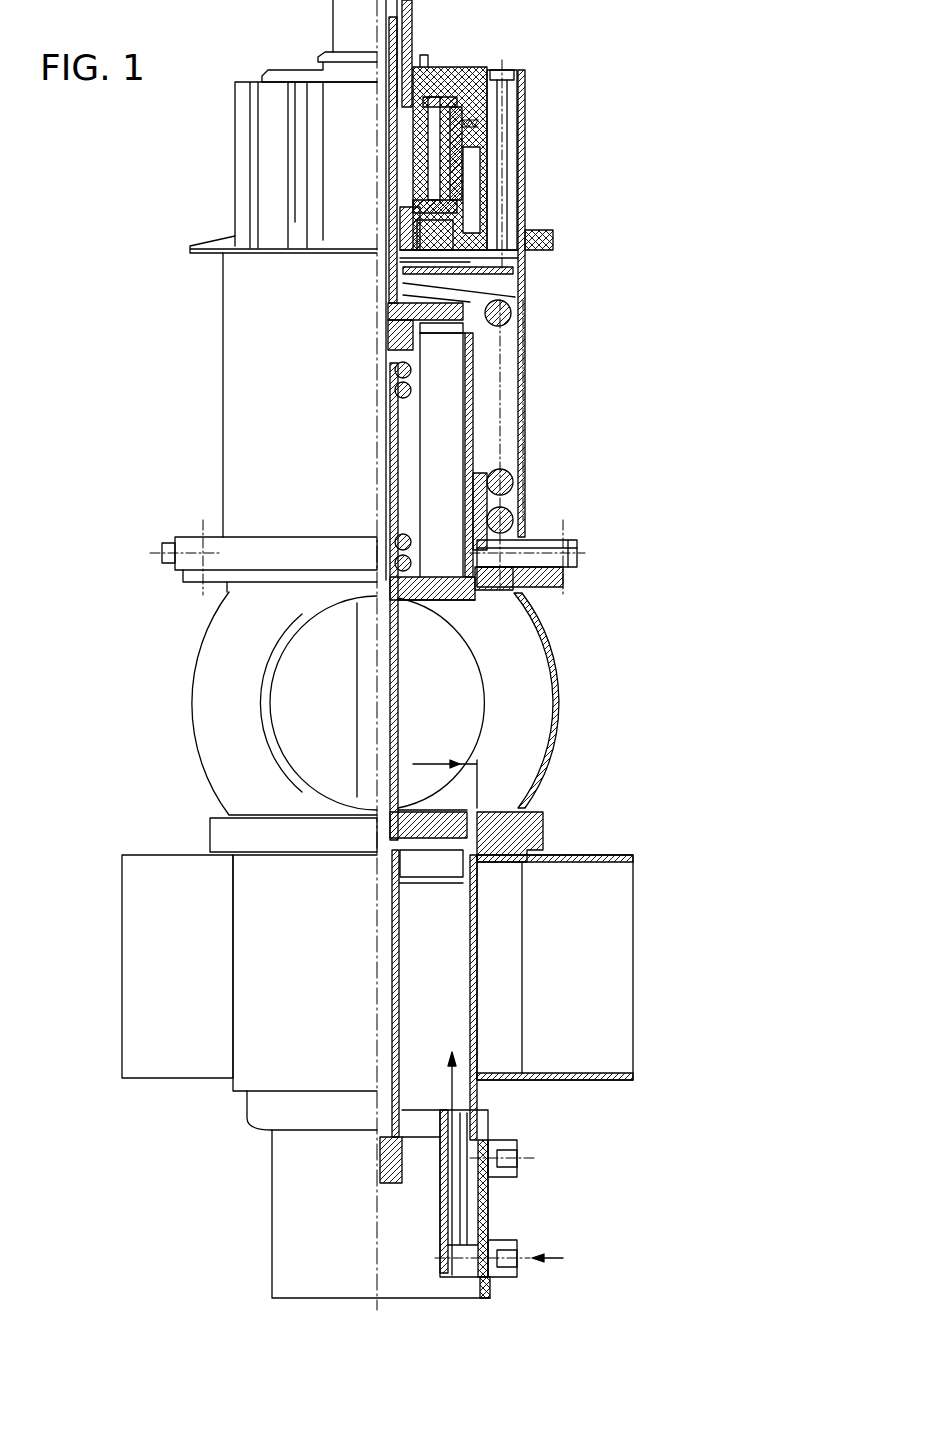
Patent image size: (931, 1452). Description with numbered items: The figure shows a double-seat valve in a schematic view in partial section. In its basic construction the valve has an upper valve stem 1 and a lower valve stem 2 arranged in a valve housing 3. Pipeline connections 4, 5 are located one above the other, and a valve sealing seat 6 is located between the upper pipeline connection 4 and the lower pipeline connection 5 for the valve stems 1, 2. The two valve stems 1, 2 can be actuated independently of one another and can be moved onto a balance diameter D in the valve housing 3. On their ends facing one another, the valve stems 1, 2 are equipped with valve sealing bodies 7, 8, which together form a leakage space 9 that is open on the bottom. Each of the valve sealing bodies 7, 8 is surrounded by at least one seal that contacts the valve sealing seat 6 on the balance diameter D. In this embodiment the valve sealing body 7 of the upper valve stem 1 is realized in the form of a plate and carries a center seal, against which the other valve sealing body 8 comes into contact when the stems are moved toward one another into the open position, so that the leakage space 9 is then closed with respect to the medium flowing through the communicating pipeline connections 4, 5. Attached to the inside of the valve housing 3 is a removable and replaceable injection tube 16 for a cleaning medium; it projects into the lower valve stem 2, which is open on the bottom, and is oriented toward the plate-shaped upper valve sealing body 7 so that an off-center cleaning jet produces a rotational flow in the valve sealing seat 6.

The upper valve stem 1 is at (399, 677).
The lower valve stem 2 is at (480, 977).
The valve housing 3 is at (545, 618).
The upper pipeline connection 4 is at (267, 705).
The lower pipeline connection 5 is at (137, 1032).
The valve sealing seat 6 is at (503, 825).
The valve sealing body 7 is at (395, 830).
The valve sealing body 8 is at (480, 878).
The leakage space 9 is at (455, 1012).
The injection tube 16 is at (463, 1213).
The balance diameter D is at (426, 764).